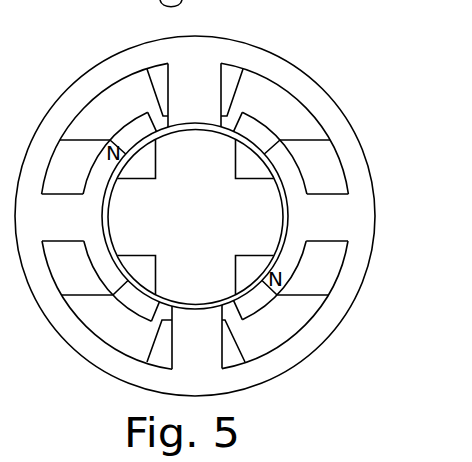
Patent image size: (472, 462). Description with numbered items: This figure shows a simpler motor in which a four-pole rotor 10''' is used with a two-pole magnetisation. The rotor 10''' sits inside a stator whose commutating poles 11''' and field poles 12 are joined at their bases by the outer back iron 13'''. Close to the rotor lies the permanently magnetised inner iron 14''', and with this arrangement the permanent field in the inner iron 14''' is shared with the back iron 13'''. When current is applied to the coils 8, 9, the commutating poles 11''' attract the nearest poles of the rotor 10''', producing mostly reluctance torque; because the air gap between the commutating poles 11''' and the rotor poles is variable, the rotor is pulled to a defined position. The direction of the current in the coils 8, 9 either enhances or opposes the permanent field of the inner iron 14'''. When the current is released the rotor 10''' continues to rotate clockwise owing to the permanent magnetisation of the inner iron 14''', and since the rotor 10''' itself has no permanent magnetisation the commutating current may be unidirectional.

The coil 8 is at (230, 77).
The coil 9 is at (329, 170).
The rotor 10''' is at (195, 217).
The commutating pole 11''' is at (195, 216).
The field pole 12 is at (195, 219).
The back iron 13''' is at (195, 216).
The inner iron 14''' is at (195, 216).